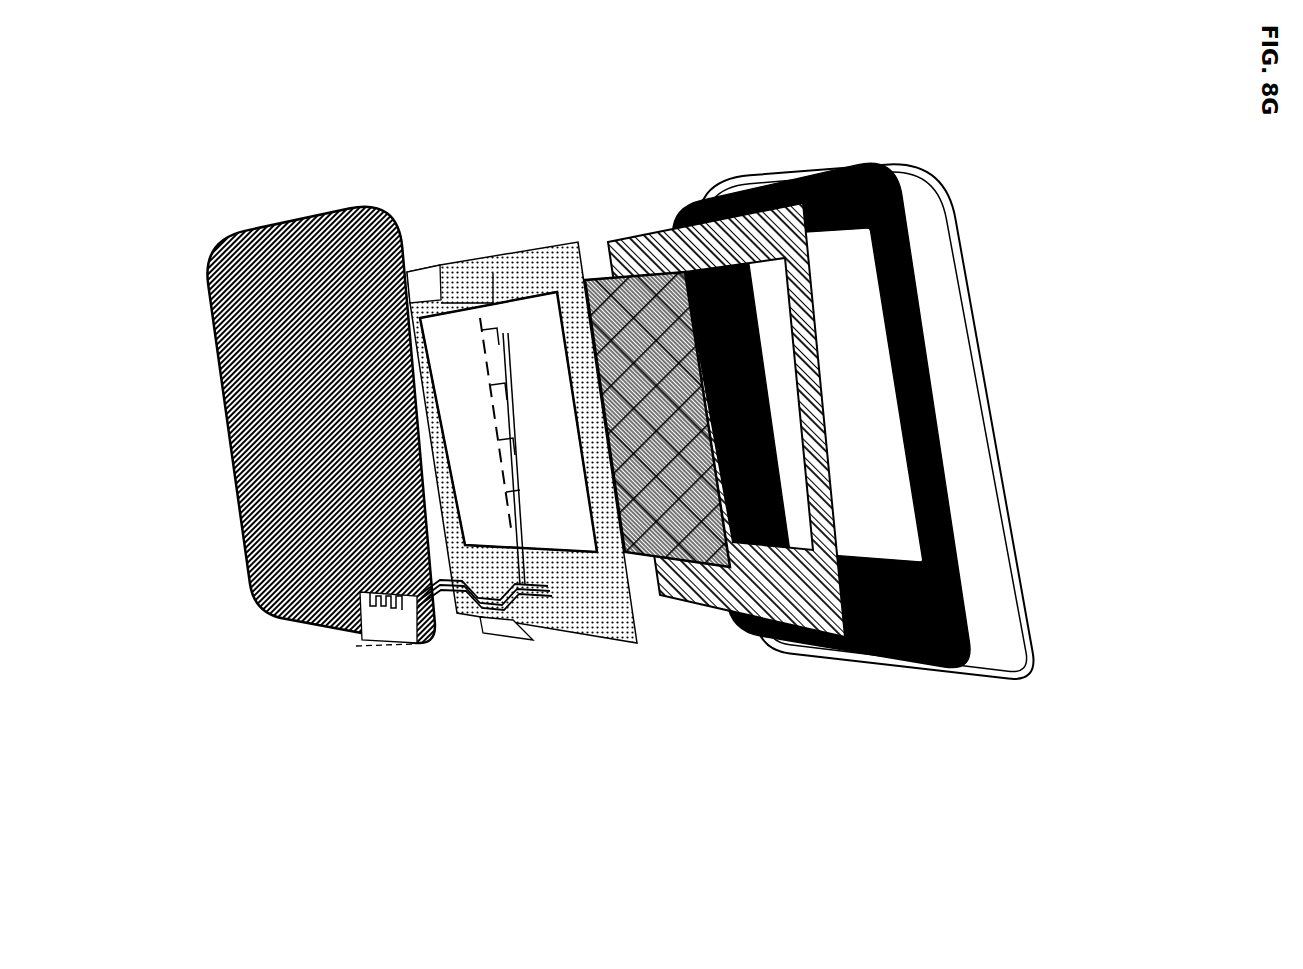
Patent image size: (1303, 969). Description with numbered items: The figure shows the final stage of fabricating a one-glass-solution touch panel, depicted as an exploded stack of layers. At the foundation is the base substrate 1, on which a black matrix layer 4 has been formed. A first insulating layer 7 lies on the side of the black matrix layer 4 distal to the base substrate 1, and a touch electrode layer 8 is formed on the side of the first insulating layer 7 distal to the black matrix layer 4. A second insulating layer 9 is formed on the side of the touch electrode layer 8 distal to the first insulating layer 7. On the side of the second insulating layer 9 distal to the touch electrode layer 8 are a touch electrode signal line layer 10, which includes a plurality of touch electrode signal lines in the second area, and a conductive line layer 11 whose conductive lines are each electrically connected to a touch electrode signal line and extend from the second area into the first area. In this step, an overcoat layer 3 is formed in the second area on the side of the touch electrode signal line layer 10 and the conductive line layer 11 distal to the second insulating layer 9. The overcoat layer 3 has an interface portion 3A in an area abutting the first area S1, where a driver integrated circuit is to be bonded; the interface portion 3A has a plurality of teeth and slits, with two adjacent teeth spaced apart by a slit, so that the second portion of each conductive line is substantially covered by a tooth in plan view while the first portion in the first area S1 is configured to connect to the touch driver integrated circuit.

The base substrate 1 is at (1003, 432).
The black matrix layer 4 is at (935, 382).
The first insulating layer 7 is at (733, 613).
The touch electrode layer 8 is at (638, 357).
The second insulating layer 9 is at (593, 638).
The touch electrode signal line layer 10 is at (510, 613).
The conductive line layer 11 is at (497, 378).
The overcoat layer 3 is at (280, 617).
The interface portion 3A is at (360, 592).
The first area S1 is at (390, 643).